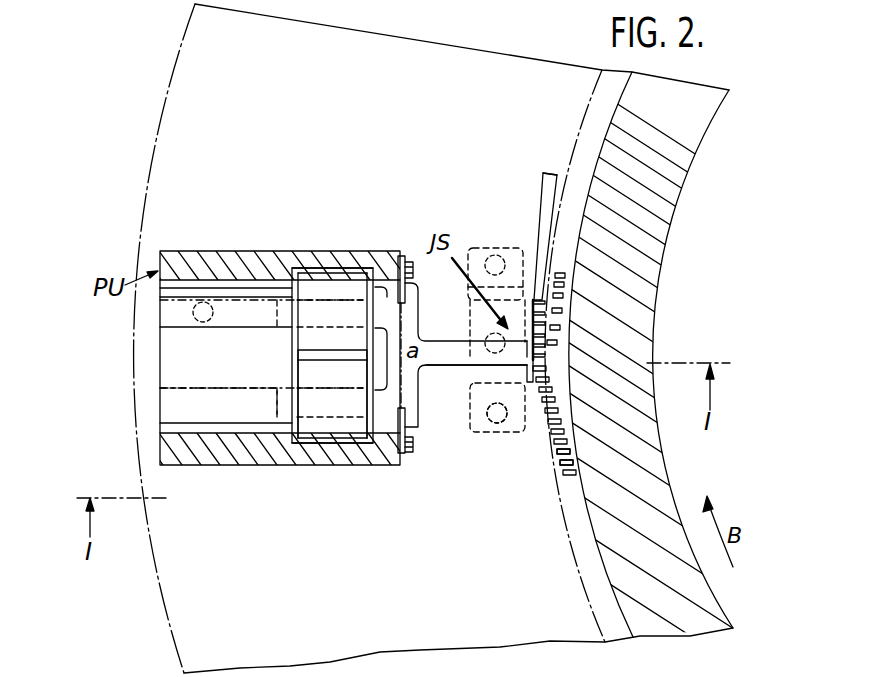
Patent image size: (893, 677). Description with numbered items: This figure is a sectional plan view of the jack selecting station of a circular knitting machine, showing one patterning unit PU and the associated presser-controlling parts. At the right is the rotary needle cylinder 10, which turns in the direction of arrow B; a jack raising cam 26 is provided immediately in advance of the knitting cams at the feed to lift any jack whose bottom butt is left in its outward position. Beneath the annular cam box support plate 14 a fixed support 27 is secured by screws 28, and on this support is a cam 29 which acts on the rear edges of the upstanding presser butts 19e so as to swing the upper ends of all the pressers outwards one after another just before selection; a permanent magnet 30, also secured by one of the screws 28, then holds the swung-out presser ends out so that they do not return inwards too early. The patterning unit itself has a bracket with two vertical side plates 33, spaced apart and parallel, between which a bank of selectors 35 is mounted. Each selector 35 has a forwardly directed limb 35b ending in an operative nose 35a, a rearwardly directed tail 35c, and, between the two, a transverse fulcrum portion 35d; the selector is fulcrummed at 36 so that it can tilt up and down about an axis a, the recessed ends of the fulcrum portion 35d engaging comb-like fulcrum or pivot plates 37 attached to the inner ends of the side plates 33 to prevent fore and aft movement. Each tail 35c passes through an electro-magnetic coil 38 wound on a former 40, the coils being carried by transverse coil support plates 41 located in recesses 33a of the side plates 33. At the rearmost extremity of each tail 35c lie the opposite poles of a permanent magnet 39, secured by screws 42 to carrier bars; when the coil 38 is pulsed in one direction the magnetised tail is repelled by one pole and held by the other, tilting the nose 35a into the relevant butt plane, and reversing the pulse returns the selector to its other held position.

The rotary needle cylinder 10 is at (663, 257).
The annular support plate 14 is at (156, 137).
The upstanding butt 19e is at (560, 310).
The jack raising cam 26 is at (543, 192).
The fixed support 27 is at (495, 436).
The screws 28 is at (492, 250).
The cam 29 is at (568, 394).
The permanent magnet 30 is at (540, 208).
The vertical side plates 33 is at (170, 251).
The recesses 33a is at (325, 478).
The selector 35 is at (410, 312).
The operative nose 35a is at (535, 357).
The forwardly directed limb 35b is at (450, 368).
The rearwardly directed tail 35c is at (317, 292).
The transverse fulcrum portion 35d is at (390, 346).
The fulcrum 36 is at (392, 279).
The fulcrum or pivot plates 37 is at (395, 280).
The electro-magnetic coil 38 is at (333, 282).
The permanent magnet 39 is at (173, 394).
The formers 40 is at (300, 313).
The coil support plates 41 is at (292, 400).
The screws 42 is at (203, 322).